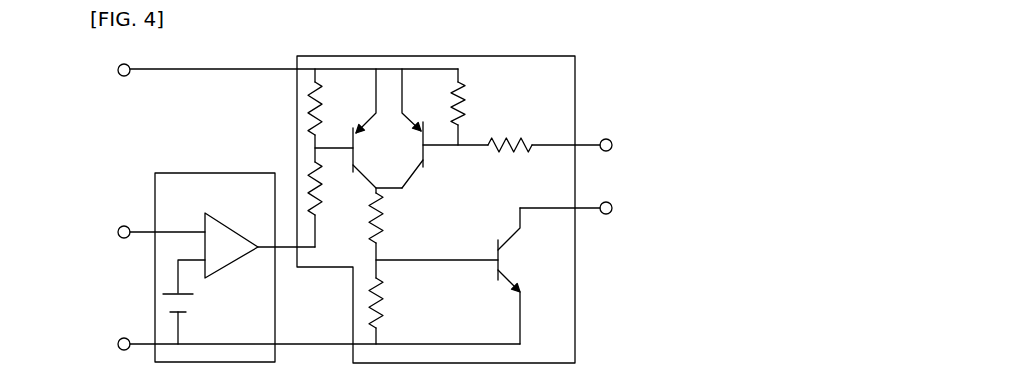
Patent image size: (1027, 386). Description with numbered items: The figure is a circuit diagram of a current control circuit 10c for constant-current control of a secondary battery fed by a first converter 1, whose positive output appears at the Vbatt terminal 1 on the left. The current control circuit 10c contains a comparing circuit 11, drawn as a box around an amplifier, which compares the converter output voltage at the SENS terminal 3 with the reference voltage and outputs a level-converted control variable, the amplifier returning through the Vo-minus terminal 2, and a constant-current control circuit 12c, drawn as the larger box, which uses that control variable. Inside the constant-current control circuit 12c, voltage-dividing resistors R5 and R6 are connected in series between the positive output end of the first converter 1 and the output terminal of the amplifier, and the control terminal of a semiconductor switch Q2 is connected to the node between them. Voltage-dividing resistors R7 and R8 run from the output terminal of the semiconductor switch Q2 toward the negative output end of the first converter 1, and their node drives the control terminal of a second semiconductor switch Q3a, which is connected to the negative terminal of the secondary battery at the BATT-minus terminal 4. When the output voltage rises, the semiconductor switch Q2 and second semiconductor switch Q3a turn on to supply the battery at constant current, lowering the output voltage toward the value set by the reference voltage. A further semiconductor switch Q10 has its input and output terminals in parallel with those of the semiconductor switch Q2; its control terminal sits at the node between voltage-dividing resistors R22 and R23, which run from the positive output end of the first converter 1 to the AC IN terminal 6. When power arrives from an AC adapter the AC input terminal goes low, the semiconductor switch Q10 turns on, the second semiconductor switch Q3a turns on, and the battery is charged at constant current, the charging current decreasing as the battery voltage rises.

The first converter 1 is at (243, 69).
The Vo- terminal 2 is at (282, 344).
The SENS terminal 3 is at (116, 232).
The BATT- terminal 4 is at (605, 215).
The AC IN terminal 6 is at (611, 150).
The current control circuit 10c is at (200, 128).
The comparing circuit 11 is at (264, 300).
The constant-current control circuit 12c is at (570, 353).
The voltage-dividing resistor R5 is at (331, 115).
The voltage-dividing resistor R6 is at (331, 204).
The voltage-dividing resistor R7 is at (392, 233).
The voltage-dividing resistor R8 is at (393, 311).
The voltage-dividing resistor R22 is at (482, 107).
The voltage-dividing resistor R23 is at (517, 130).
The semiconductor switch Q2 is at (377, 128).
The semiconductor switch Q10 is at (445, 128).
The second semiconductor switch Q3a is at (523, 276).